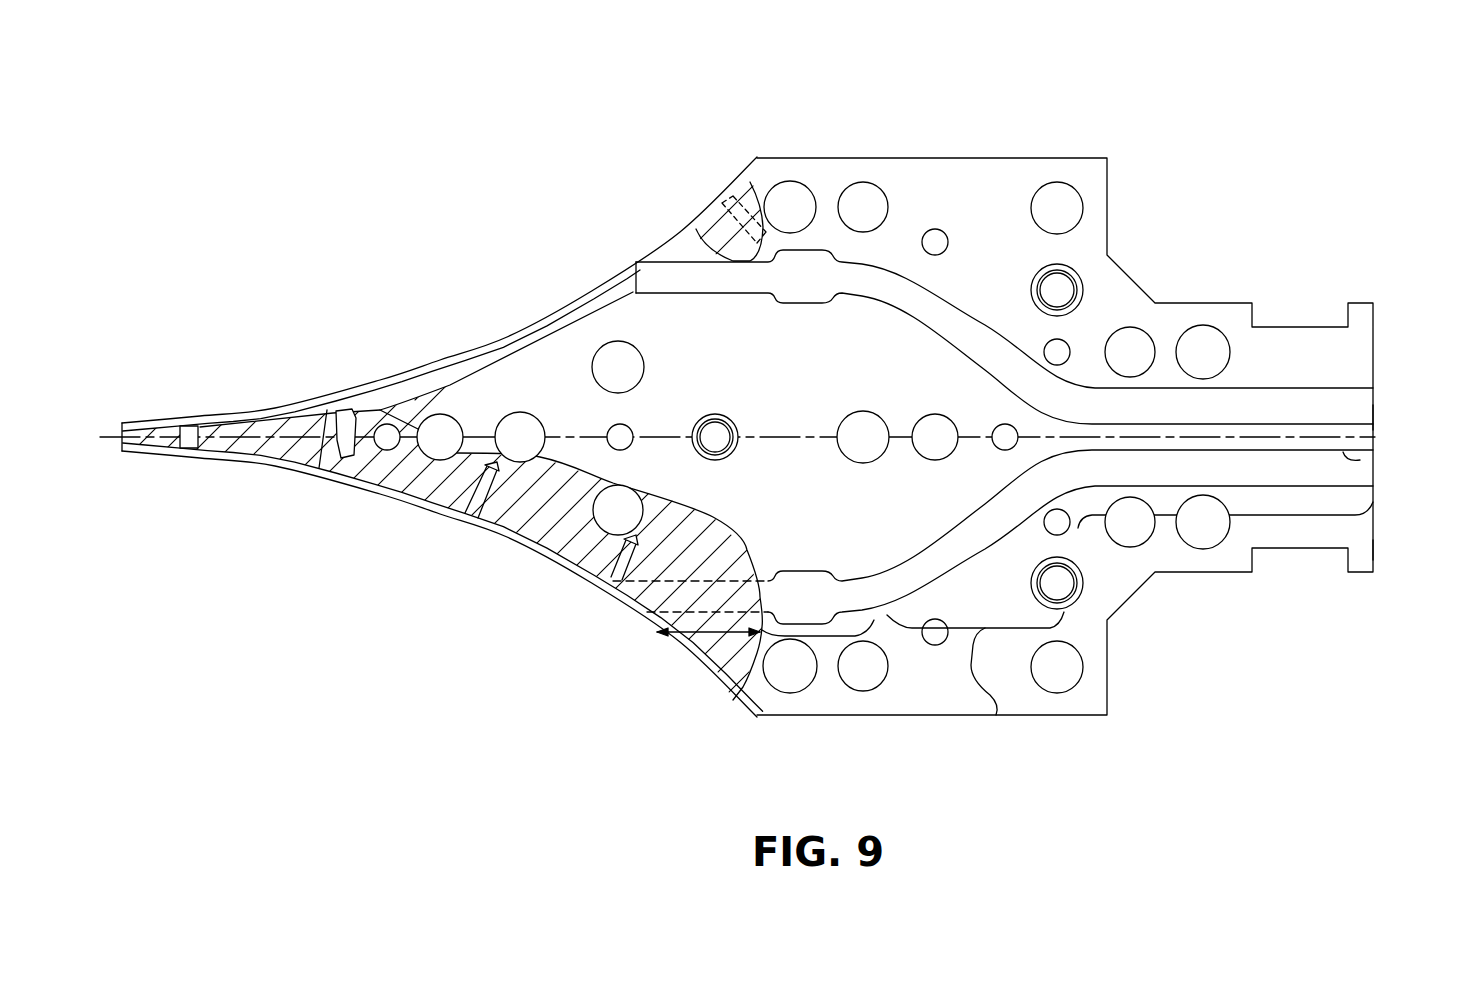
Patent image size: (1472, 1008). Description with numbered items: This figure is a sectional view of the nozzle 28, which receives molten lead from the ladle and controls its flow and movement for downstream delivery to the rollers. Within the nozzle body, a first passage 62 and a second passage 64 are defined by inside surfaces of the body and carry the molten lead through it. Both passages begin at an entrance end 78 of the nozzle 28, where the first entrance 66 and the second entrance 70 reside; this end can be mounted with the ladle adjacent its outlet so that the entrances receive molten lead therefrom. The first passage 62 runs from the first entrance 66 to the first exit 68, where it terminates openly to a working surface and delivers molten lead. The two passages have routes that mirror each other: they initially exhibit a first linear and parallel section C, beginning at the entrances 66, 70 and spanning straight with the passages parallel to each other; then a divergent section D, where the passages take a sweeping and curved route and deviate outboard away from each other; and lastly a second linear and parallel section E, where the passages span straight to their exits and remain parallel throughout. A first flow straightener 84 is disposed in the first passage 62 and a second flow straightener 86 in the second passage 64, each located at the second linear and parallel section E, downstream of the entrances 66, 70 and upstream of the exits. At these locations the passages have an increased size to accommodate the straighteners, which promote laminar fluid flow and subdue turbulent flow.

The nozzle 28 is at (1010, 145).
The first passage 62 is at (1340, 403).
The second passage 64 is at (1340, 471).
The first entrance 66 is at (1375, 417).
The first exit 68 is at (637, 262).
The second entrance 70 is at (1360, 460).
The entrance end 78 is at (1390, 549).
The first flow straightener 84 is at (797, 277).
The second flow straightener 86 is at (813, 602).
The first linear and parallel section C is at (1230, 517).
The divergent section D is at (996, 715).
The second linear and parallel section E is at (770, 636).